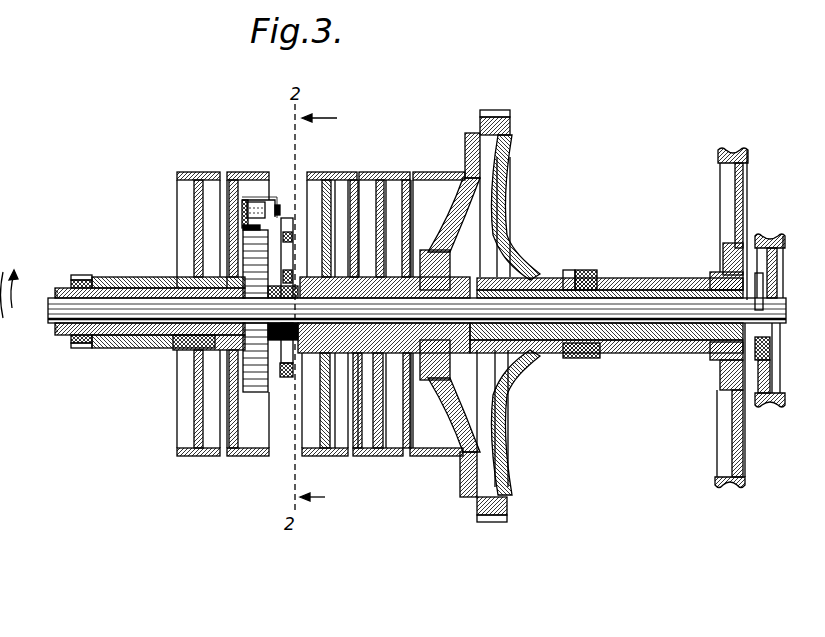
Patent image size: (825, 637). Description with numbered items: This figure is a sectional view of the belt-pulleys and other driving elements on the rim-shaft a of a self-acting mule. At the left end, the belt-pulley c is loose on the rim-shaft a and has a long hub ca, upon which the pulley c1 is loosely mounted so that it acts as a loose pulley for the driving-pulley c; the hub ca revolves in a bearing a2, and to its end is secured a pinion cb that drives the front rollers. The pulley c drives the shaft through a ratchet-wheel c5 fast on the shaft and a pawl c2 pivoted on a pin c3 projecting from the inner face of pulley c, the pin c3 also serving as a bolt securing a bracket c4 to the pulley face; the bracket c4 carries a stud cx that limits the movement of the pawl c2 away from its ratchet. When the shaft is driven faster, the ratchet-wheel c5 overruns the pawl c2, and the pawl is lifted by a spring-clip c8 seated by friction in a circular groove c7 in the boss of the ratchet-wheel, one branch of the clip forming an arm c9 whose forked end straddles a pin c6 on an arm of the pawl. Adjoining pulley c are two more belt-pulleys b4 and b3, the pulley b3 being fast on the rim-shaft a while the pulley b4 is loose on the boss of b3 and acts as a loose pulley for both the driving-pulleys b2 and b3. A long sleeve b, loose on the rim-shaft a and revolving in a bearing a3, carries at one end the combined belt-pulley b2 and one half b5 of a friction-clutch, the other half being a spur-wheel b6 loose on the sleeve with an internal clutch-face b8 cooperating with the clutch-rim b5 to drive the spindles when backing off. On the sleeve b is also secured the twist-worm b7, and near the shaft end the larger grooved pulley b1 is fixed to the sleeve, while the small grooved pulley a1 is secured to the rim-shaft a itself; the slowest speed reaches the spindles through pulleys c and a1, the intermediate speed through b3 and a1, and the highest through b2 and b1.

The rim-shaft a is at (48, 312).
The small grooved pulley a1 is at (772, 235).
The bearing a2 is at (166, 288).
The bearing a3 is at (684, 292).
The long sleeve b is at (642, 282).
The larger grooved pulley b1 is at (733, 148).
The belt-pulley b2 is at (425, 182).
The belt-pulley b3 is at (344, 182).
The belt-pulley b4 is at (372, 190).
The clutch-rim b5 is at (500, 158).
The spur-wheel b6 is at (514, 128).
The twist-worm b7 is at (586, 272).
The internal clutch-face b8 is at (497, 110).
The belt-pulley c is at (240, 172).
The pulley c1 is at (192, 172).
The pawl c2 is at (242, 218).
The pin c3 is at (288, 218).
The bracket c4 is at (258, 200).
The ratchet-wheel c5 is at (254, 392).
The pin c6 is at (327, 176).
The circular groove c7 is at (274, 340).
The spring-clip c8 is at (293, 372).
The arm c9 is at (292, 254).
The long hub ca is at (120, 283).
The pinion cb is at (82, 275).
The stud cx is at (245, 228).